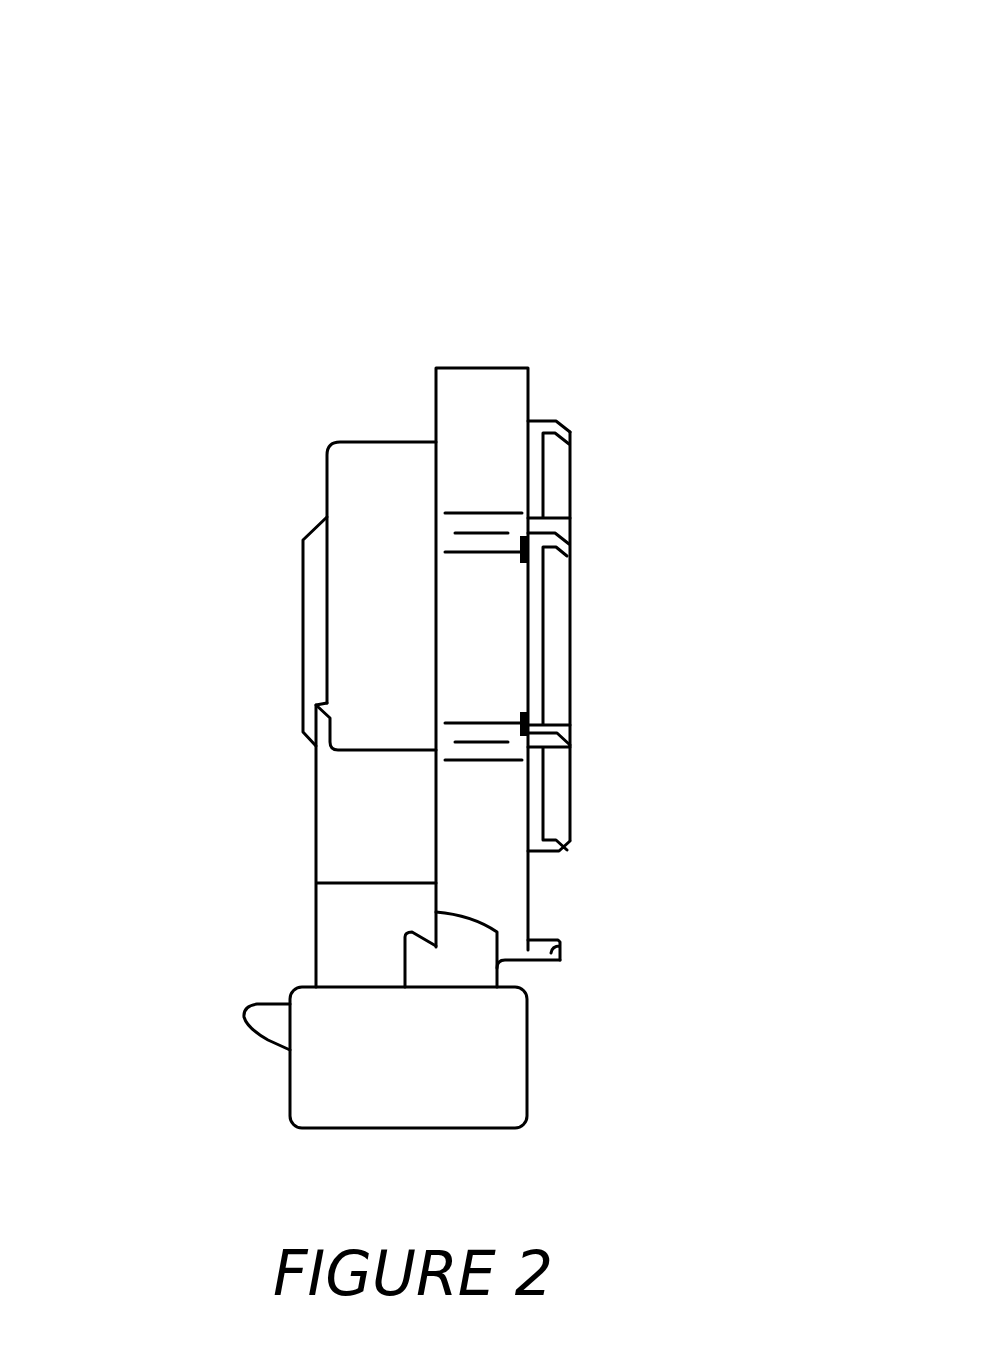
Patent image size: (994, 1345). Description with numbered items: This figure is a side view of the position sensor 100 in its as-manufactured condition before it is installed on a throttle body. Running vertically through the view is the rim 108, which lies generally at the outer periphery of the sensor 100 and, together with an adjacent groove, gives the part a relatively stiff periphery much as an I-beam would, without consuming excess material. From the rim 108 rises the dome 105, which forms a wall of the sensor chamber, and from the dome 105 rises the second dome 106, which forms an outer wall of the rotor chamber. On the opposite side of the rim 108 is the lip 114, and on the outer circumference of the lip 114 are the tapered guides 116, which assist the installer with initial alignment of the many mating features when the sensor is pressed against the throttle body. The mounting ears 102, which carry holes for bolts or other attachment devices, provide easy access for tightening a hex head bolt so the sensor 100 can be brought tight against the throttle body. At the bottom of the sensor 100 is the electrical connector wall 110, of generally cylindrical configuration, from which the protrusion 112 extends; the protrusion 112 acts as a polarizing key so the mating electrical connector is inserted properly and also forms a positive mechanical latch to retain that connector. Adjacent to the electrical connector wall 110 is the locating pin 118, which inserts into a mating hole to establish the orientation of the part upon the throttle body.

The position sensor 100 is at (586, 148).
The mounting ears 102 is at (500, 676).
The dome 105 is at (347, 477).
The second dome 106 is at (313, 613).
The rim 108 is at (465, 385).
The electrical connector wall 110 is at (475, 1052).
The protrusion 112 is at (265, 1018).
The lip 114 is at (560, 637).
The tapered guides 116 is at (560, 421).
The locating pin 118 is at (560, 962).